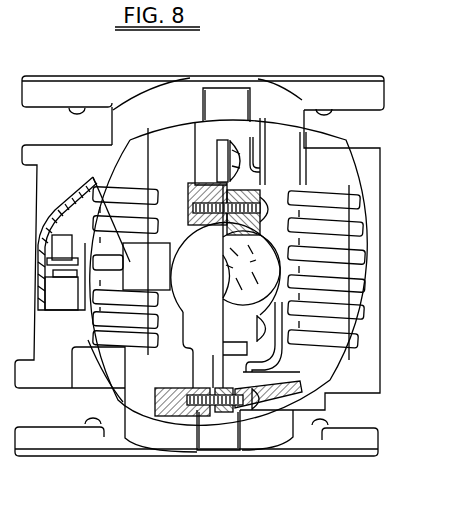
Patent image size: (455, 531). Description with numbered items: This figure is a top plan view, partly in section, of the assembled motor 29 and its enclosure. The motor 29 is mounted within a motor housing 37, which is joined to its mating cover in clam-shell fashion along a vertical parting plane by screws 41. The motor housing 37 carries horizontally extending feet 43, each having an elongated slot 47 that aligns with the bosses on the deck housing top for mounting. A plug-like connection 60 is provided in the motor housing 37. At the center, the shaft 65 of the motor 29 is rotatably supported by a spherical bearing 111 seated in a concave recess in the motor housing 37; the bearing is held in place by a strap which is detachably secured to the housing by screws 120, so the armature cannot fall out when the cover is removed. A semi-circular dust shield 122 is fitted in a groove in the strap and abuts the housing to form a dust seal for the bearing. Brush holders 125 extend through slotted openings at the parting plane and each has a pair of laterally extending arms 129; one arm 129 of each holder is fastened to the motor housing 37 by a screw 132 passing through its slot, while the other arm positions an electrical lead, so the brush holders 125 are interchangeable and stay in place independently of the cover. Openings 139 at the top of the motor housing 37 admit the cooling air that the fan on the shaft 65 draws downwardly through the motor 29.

The motor 29 is at (3, 33).
The feet 43 is at (47, 92).
The elongated slot 47 is at (85, 107).
The brush holder 125 is at (228, 98).
The screw 132 is at (234, 148).
The arms 129 is at (222, 150).
The screws 120 is at (265, 185).
The openings 139 is at (98, 252).
The spherical bearing 111 is at (223, 235).
The shaft 65 is at (221, 260).
The semi-circular dust shield 122 is at (224, 290).
The plug-like connection 60 is at (63, 293).
The motor housing 37 is at (123, 370).
The screws 41 is at (264, 402).